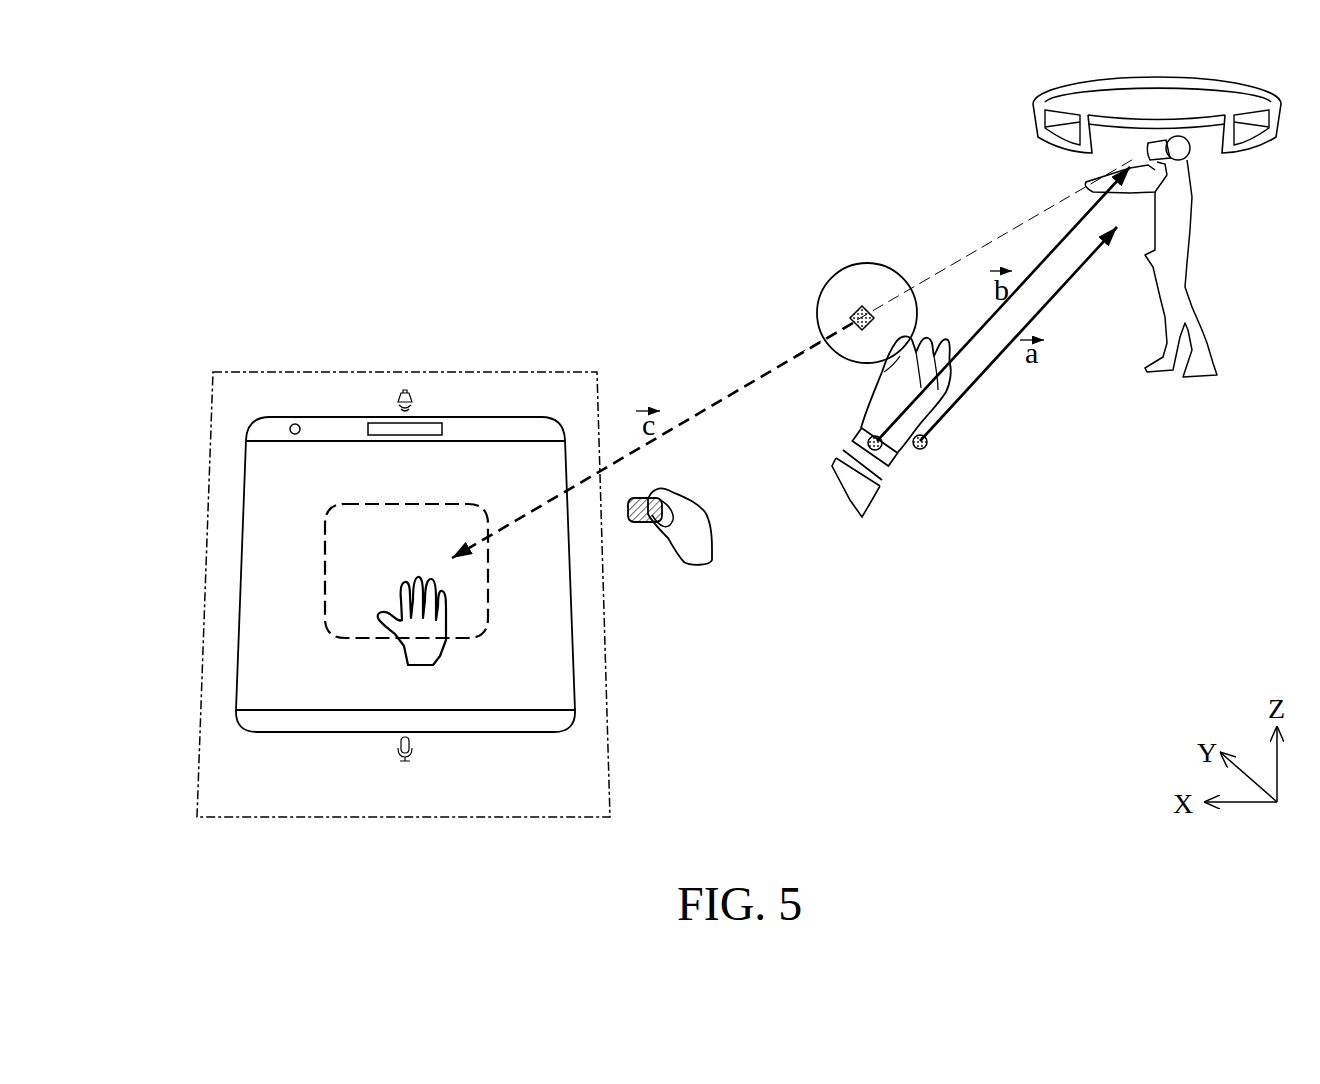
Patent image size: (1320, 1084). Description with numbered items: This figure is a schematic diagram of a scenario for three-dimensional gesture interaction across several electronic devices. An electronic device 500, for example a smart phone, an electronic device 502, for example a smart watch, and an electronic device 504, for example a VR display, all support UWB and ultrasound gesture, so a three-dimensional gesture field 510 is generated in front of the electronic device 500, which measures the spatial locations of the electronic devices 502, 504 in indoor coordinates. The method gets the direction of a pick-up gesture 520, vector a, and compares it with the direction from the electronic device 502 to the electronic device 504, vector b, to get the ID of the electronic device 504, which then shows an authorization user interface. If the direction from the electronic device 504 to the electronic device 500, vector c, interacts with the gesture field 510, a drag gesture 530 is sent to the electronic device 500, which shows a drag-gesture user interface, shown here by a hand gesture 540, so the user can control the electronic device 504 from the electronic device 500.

The electronic device 500 is at (243, 575).
The electronic device 502 is at (897, 462).
The electronic device 504 is at (1190, 158).
The 3D gesture field 510 is at (198, 752).
The pick-up gesture 520 is at (862, 520).
The drag gesture 530 is at (698, 566).
The hand gesture on display 540 is at (420, 667).